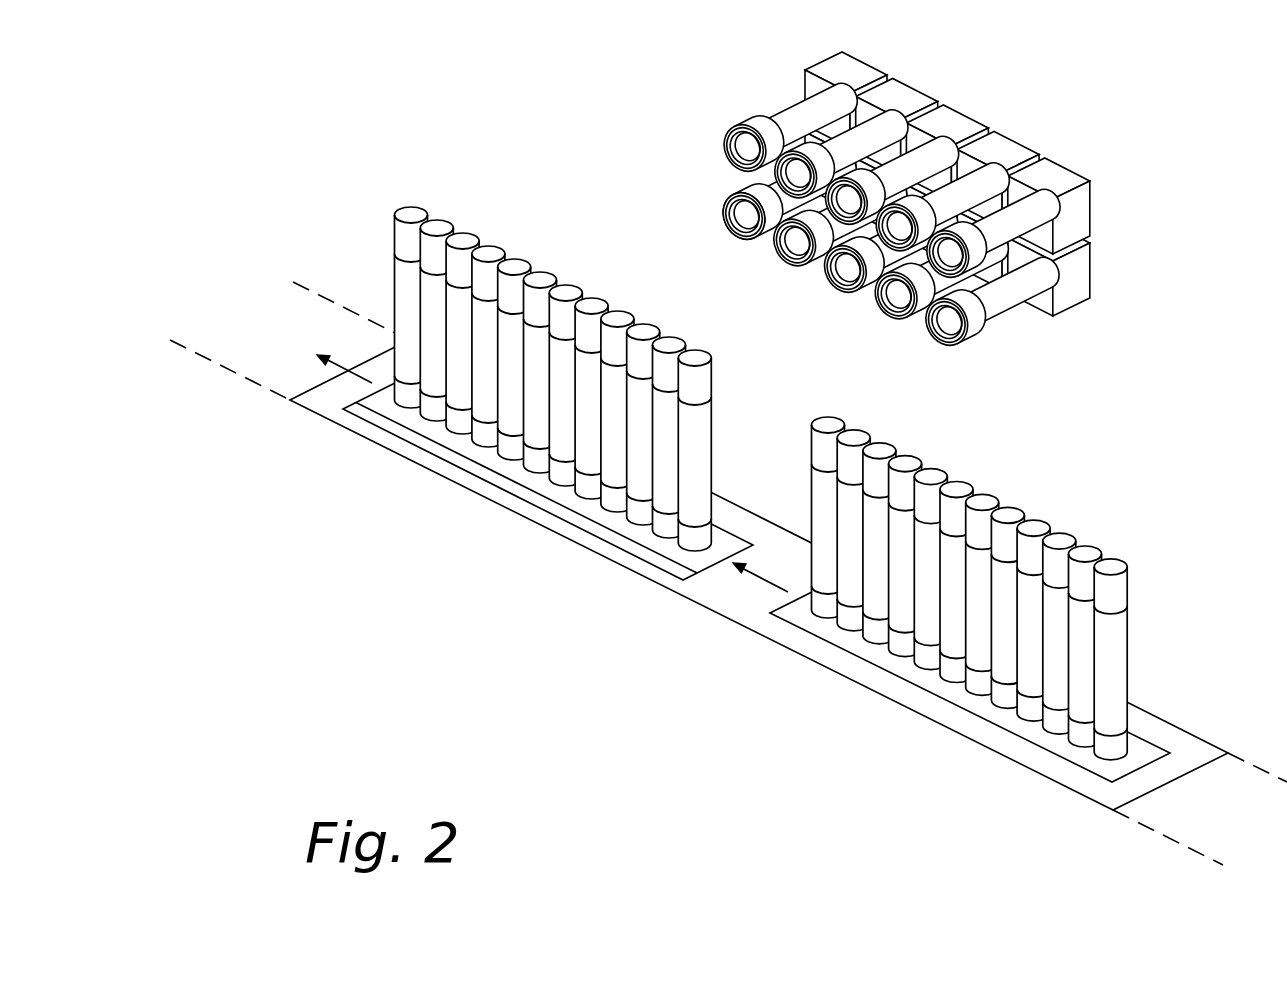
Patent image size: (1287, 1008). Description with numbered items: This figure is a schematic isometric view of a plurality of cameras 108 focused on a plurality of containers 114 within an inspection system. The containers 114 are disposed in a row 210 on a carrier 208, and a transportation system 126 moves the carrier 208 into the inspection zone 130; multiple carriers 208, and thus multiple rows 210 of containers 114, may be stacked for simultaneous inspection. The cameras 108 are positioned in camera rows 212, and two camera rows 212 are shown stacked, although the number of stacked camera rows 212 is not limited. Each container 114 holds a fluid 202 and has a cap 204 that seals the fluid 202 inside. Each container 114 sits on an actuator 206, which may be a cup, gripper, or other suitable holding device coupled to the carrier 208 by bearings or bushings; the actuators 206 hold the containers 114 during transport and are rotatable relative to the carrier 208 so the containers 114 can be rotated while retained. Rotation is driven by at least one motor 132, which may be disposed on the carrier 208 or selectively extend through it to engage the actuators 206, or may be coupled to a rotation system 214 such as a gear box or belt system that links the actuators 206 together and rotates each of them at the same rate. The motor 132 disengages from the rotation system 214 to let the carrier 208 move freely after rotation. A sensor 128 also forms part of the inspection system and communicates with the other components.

The camera 108 is at (1141, 329).
The container 114 is at (1130, 628).
The transportation system 126 is at (578, 546).
The sensor 128 is at (810, 542).
The inspection zone 130 is at (757, 532).
The motor 132 is at (510, 494).
The fluid 202 is at (391, 277).
The cap 204 is at (714, 372).
The actuator 206 is at (689, 542).
The carrier 208 is at (402, 428).
The row 210 is at (364, 240).
The camera row 212 is at (687, 131).
The rotation system 214 is at (714, 428).